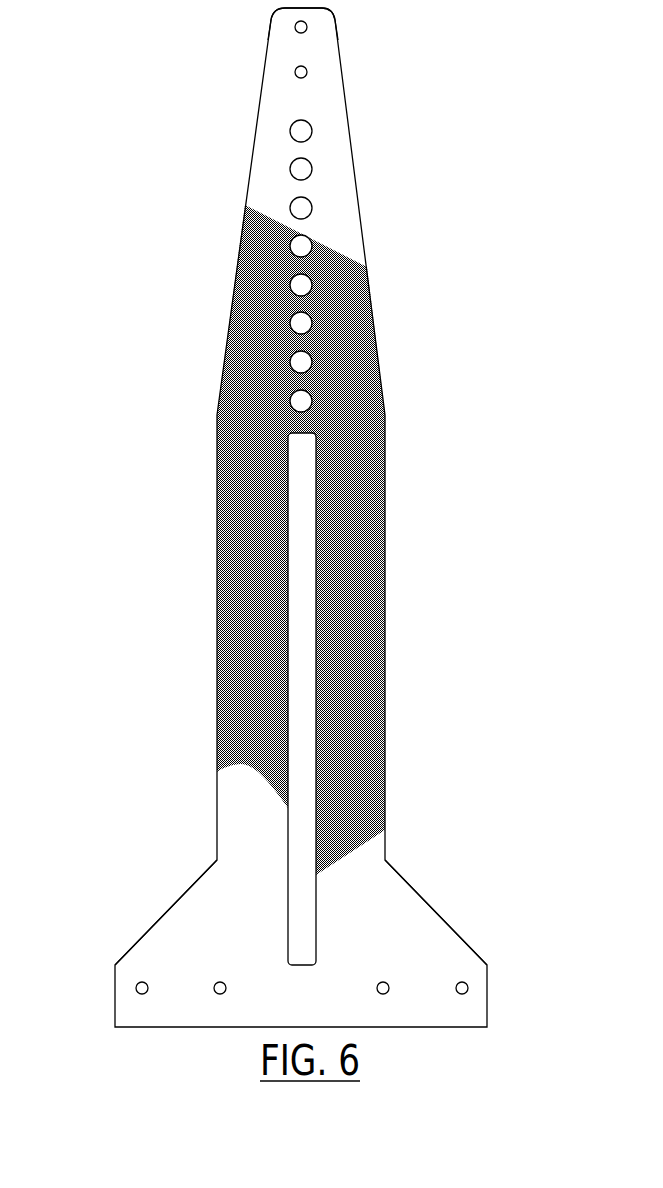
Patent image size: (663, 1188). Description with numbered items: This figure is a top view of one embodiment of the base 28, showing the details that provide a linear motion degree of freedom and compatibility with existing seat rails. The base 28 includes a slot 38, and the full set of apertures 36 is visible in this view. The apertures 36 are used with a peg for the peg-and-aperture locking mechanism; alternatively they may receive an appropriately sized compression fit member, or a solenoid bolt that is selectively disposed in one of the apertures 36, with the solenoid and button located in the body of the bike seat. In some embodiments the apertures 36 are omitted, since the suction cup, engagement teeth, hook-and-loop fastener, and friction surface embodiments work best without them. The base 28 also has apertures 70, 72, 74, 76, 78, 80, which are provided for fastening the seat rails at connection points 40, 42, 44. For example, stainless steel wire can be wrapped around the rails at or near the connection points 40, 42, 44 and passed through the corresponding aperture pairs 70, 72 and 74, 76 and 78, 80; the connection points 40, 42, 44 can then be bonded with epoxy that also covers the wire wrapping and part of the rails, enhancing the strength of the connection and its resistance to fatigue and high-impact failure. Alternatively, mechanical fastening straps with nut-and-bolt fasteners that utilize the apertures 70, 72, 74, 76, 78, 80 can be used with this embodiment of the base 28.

The base 28 is at (248, 736).
The apertures 36 is at (208, 125).
The slot 38 is at (312, 608).
The connection point 40 is at (305, 48).
The connection point 42 is at (424, 986).
The connection point 44 is at (178, 982).
The aperture 70 is at (294, 26).
The aperture 72 is at (308, 72).
The aperture 74 is at (136, 988).
The aperture 76 is at (221, 981).
The aperture 78 is at (382, 981).
The aperture 80 is at (468, 987).